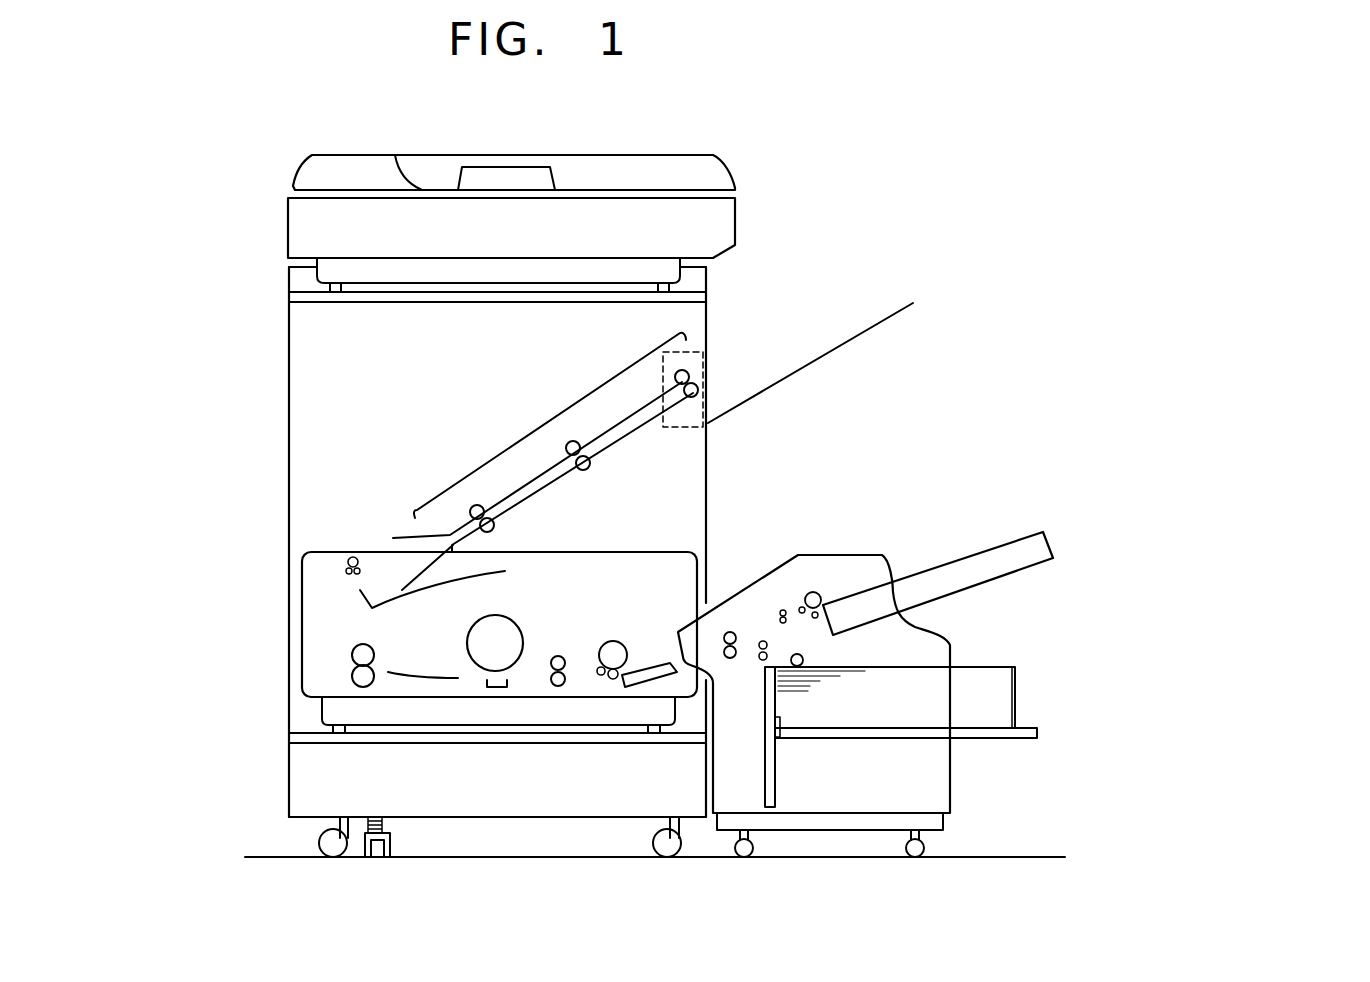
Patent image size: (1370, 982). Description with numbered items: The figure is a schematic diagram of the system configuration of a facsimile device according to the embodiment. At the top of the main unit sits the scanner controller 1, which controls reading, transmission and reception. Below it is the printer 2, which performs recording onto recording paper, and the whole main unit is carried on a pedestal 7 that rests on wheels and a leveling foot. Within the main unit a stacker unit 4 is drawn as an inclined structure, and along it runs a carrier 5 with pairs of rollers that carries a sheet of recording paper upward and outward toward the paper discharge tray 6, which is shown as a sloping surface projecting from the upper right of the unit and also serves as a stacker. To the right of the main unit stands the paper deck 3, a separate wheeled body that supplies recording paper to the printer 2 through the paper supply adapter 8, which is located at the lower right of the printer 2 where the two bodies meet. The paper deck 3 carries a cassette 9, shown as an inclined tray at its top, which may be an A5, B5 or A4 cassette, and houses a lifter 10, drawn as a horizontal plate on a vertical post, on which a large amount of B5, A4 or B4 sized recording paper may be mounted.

The scanner controller 1 is at (713, 170).
The printer 2 is at (327, 624).
The paper deck 3 is at (898, 552).
The stacker unit 4 is at (534, 423).
The carrier 5 is at (548, 470).
The paper discharge tray 6 is at (837, 350).
The pedestal 7 is at (308, 414).
The paper supply adapter 8 is at (645, 660).
The cassette 9 is at (1000, 550).
The lifter 10 is at (1027, 727).